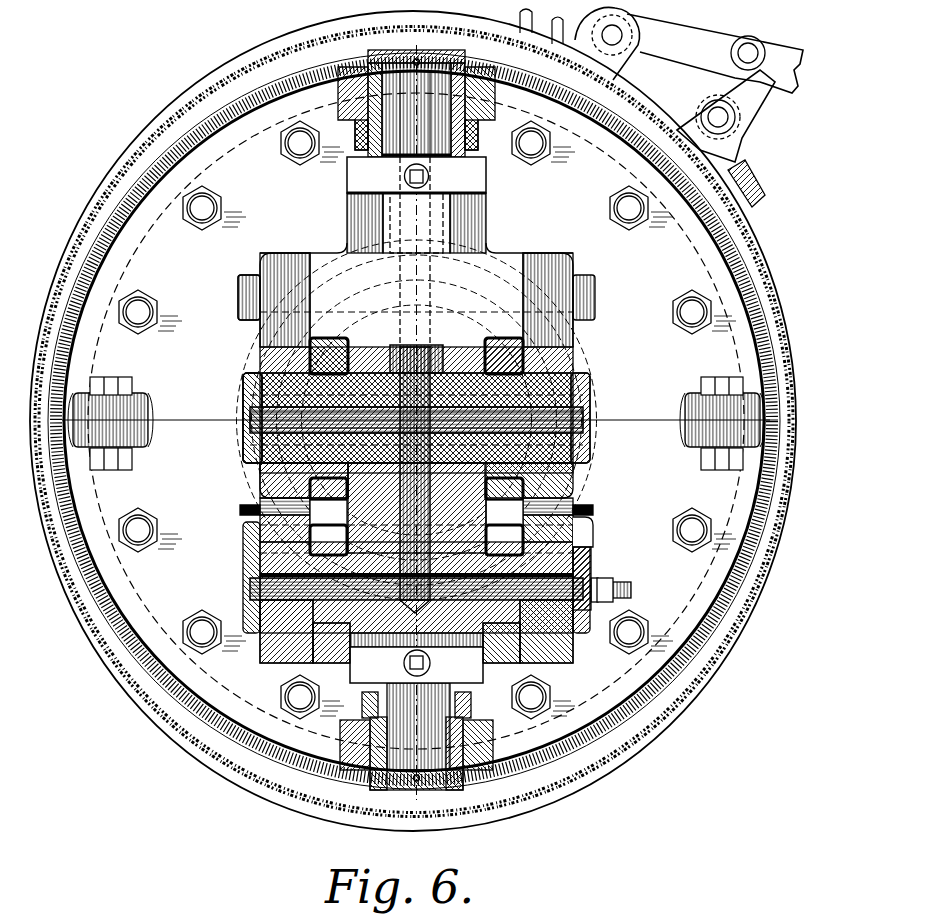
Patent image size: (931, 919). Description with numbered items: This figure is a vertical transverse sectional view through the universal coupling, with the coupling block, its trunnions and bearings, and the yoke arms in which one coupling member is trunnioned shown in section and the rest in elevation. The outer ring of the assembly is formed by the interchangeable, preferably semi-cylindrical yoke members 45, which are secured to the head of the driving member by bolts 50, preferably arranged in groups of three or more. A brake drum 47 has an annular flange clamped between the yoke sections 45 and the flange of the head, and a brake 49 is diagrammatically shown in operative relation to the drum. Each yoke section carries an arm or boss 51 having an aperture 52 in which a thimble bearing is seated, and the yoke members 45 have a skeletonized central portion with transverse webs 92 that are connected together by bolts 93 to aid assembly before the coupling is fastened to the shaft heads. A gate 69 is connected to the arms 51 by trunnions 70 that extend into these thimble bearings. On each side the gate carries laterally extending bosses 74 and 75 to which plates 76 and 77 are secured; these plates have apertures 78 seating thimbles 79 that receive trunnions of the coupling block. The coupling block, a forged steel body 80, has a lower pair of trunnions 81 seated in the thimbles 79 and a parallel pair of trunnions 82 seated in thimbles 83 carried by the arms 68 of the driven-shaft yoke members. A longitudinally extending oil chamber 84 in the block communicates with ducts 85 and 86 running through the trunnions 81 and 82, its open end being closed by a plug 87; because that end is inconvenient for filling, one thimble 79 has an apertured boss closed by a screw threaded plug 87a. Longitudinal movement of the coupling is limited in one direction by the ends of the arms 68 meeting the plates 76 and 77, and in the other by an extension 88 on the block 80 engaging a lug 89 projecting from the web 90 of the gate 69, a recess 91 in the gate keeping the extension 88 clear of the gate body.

The yoke members 45 is at (153, 238).
The brake drum 47 is at (600, 742).
The brake 49 is at (705, 650).
The bolts 50 is at (247, 152).
The arm or boss 51 is at (300, 71).
The aperture 52 is at (500, 777).
The extensions or arms 68 is at (268, 482).
The gate 69 is at (470, 220).
The trunnions 70 is at (340, 100).
The boss 74 is at (330, 262).
The boss 75 is at (262, 518).
The plate 76 is at (540, 350).
The plate 77 is at (257, 328).
The apertures 78 is at (280, 642).
The thimbles 79 is at (272, 590).
The body 80 is at (580, 518).
The lower pair of trunnions 81 is at (583, 553).
The pair of trunnions 82 is at (253, 400).
The thimbles 83 is at (252, 445).
The oil chamber 84 is at (397, 647).
The ducts or conduits 85 is at (600, 578).
The ducts or conduits 86 is at (257, 433).
The plug 87 is at (390, 353).
The screw threaded plug 87a is at (632, 590).
The extension 88 is at (565, 342).
The lug 89 is at (493, 300).
The web 90 is at (420, 247).
The recess 91 is at (387, 213).
The transverse webs 92 is at (257, 365).
The bolts 93 is at (307, 293).